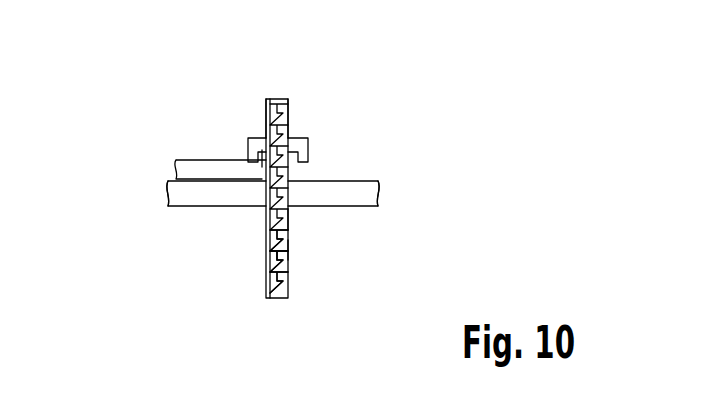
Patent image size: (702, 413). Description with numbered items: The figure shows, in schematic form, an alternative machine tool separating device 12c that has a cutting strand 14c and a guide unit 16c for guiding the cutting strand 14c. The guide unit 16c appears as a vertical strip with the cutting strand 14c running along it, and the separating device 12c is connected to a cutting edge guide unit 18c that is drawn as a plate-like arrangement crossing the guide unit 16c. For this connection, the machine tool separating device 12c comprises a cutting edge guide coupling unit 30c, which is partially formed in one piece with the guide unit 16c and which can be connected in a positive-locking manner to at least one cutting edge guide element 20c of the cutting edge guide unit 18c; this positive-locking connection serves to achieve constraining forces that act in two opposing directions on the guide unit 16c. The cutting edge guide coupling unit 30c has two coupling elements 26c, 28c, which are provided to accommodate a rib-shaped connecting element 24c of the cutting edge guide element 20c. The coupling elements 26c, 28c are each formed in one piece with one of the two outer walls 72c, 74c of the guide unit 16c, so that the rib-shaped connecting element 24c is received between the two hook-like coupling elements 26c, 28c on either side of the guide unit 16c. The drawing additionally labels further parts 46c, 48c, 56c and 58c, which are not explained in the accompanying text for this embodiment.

The machine tool separating device 12c is at (307, 279).
The cutting strand 14c is at (289, 259).
The guide unit 16c is at (267, 285).
The cutting edge guide unit 18c is at (150, 172).
The cutting edge guide element 20c is at (190, 170).
The rib-shaped connecting element 24c is at (262, 152).
The coupling element 26c is at (265, 137).
The coupling element 28c is at (292, 137).
The cutting edge guide coupling unit 30c is at (247, 125).
The second component 46c is at (369, 192).
The second component plate 48c is at (365, 180).
The latching tooth 56c is at (268, 233).
The latching surface 58c is at (291, 220).
The outer wall 72c is at (267, 267).
The outer wall 74c is at (290, 250).